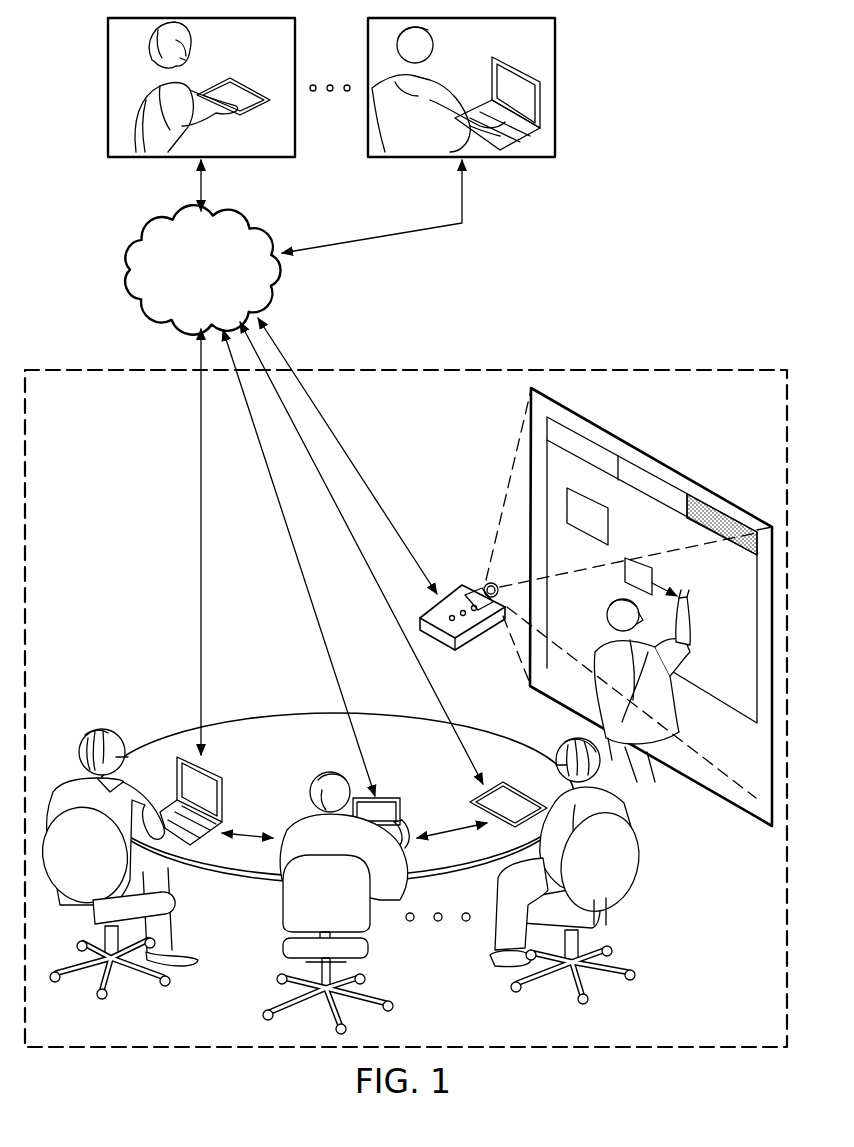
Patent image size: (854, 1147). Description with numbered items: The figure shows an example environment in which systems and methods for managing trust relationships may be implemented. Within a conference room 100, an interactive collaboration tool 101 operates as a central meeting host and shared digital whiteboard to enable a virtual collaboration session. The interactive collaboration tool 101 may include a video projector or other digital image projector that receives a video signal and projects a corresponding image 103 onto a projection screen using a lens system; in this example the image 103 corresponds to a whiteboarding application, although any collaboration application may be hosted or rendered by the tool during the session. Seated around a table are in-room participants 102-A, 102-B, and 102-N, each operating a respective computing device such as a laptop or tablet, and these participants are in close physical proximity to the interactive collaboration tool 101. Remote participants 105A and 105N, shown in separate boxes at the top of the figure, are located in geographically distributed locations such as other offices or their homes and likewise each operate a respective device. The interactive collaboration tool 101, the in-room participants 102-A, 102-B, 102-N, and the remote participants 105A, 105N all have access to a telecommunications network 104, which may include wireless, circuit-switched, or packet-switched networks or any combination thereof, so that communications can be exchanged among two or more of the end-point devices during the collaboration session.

The conference room 100 is at (585, 367).
The interactive collaboration tool 101 is at (472, 640).
The in-room participant 102-A is at (131, 756).
The in-room participant 102-B is at (278, 894).
The in-room participant 102-N is at (622, 800).
The image 103 is at (650, 469).
The network 104 is at (217, 282).
The remote participant 105A is at (107, 88).
The remote participant 105N is at (555, 88).